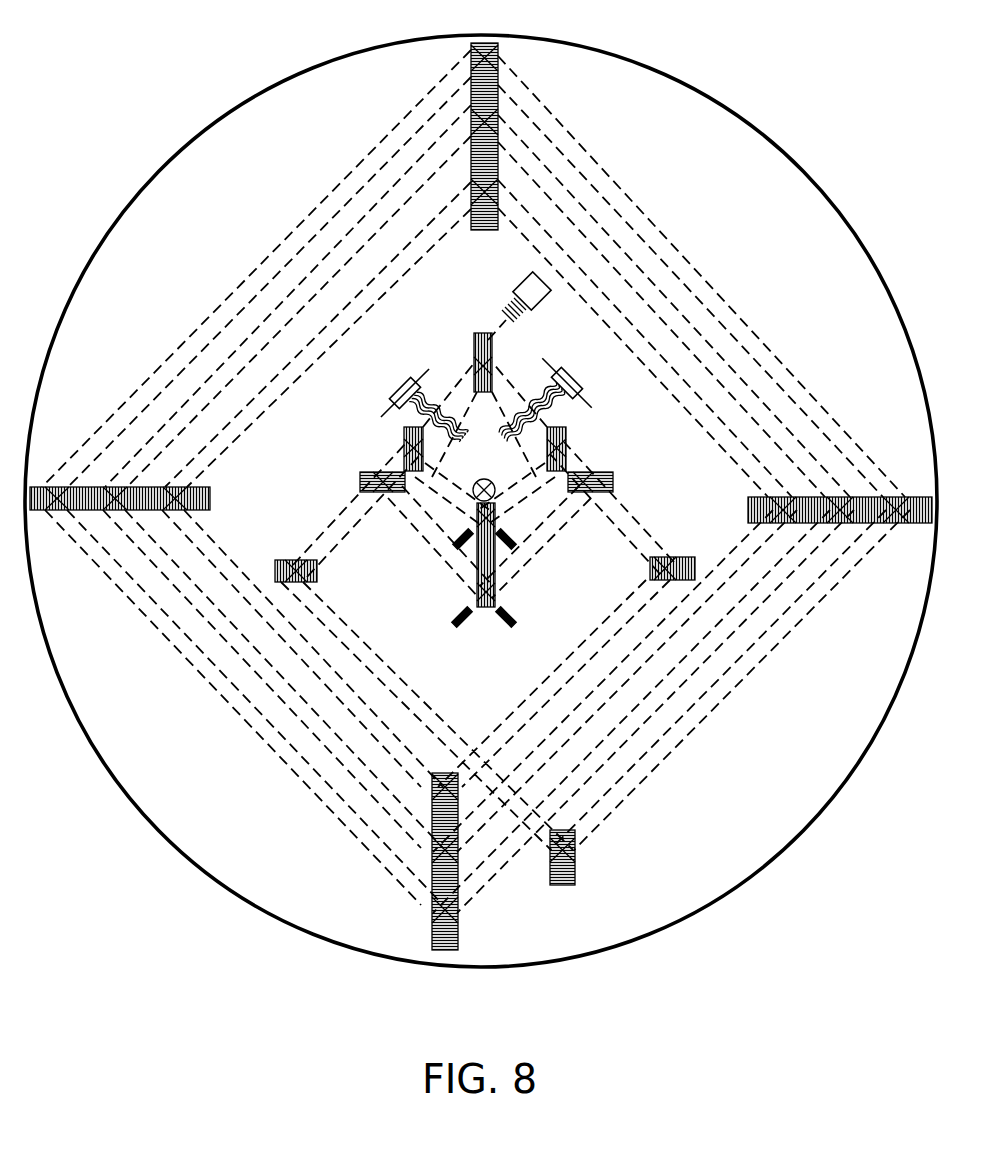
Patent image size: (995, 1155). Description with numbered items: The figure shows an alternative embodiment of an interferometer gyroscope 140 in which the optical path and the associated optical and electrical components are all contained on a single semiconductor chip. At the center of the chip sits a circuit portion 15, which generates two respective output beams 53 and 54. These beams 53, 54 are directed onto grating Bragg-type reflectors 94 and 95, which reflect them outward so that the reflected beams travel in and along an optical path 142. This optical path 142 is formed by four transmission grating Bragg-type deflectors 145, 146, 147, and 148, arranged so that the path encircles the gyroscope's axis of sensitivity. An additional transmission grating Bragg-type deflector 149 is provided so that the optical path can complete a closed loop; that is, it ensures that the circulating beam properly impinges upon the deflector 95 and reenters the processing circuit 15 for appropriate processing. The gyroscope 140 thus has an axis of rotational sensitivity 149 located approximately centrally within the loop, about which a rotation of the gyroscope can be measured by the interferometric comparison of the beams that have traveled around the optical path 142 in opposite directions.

The gyroscope 140 is at (198, 92).
The optical path 142 is at (216, 267).
The circuit portion 15 is at (428, 339).
The transmission grating Bragg-type deflector 146 is at (498, 48).
The transmission grating Bragg-type deflector 145 is at (33, 487).
The transmission grating Bragg-type deflector 147 is at (920, 497).
The transmission grating Bragg-type deflector 148 is at (458, 936).
The additional transmission grating Bragg-type deflector 149 is at (482, 480).
The output beam 54 is at (358, 500).
The output beam 53 is at (638, 518).
The grating Bragg-type reflector 95 is at (283, 562).
The grating Bragg-type reflector 94 is at (686, 555).